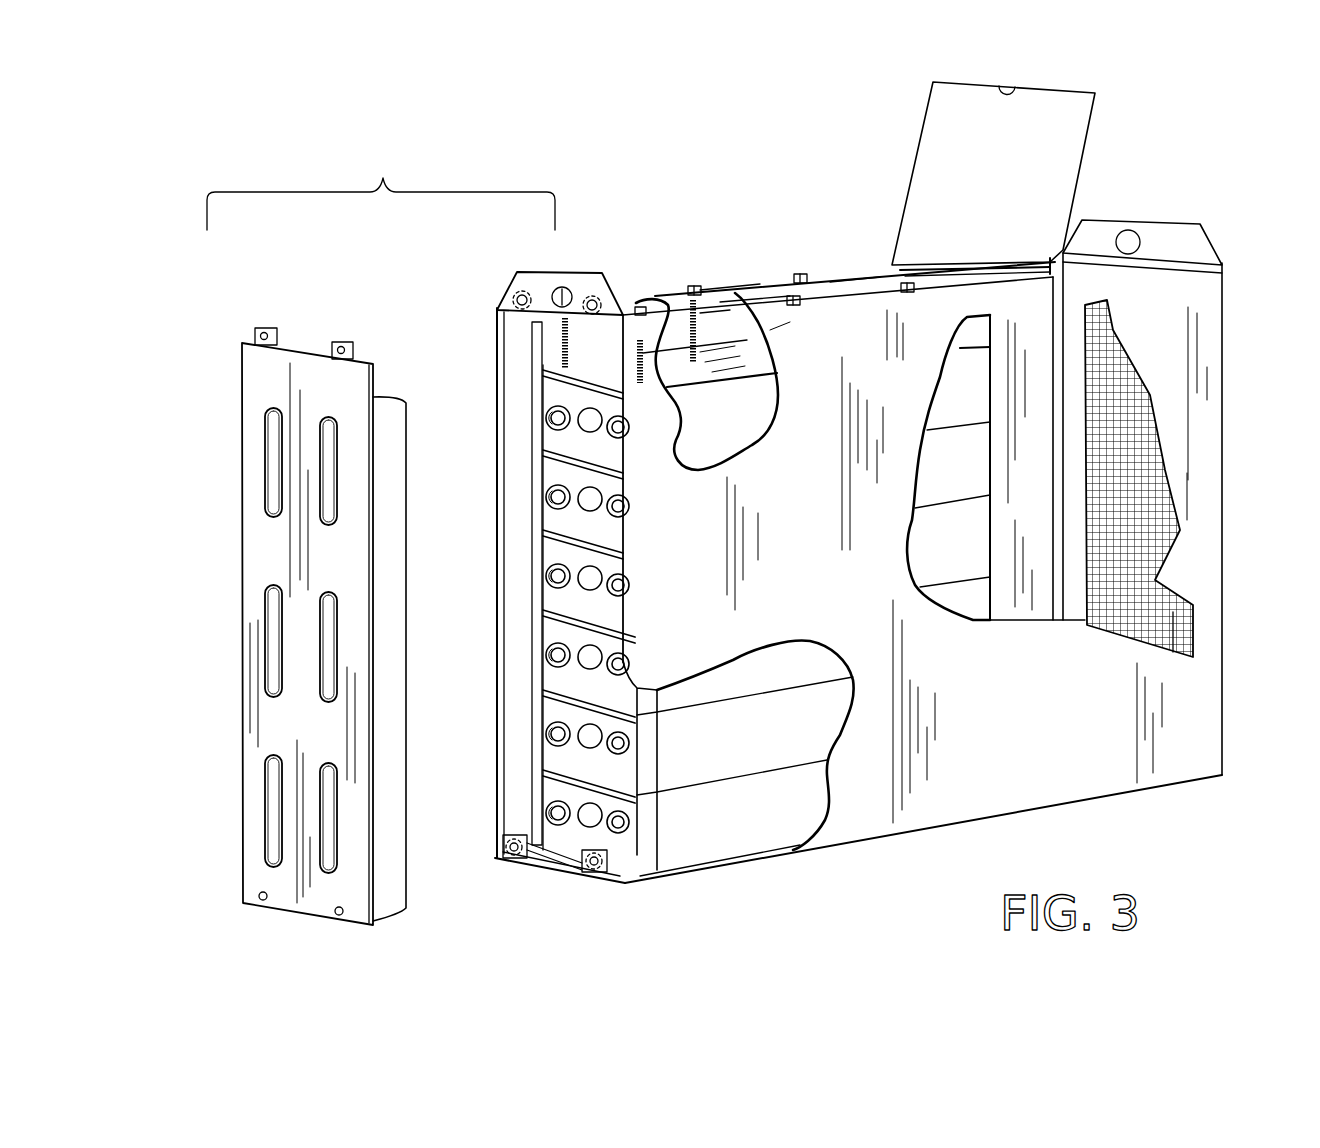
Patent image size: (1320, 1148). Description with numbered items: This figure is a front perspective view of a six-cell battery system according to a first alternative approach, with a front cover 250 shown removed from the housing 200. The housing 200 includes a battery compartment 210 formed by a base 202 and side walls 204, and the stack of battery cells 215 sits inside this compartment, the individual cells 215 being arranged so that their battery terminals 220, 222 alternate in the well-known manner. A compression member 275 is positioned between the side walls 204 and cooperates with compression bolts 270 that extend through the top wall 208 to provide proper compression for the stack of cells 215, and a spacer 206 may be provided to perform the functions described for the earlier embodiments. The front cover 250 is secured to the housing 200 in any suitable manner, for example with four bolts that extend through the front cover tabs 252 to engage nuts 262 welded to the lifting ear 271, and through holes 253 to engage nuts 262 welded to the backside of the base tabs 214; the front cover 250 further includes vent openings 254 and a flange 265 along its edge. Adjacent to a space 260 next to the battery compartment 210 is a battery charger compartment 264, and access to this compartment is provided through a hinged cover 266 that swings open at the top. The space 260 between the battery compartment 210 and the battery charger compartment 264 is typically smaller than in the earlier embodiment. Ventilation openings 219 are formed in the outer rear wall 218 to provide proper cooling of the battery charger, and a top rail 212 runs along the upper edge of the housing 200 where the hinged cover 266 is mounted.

The housing 200 is at (770, 240).
The base 202 is at (823, 847).
The side walls 204 is at (599, 585).
The spacer 206 is at (537, 350).
The top wall 208 is at (867, 273).
The battery compartment 210 is at (850, 488).
The top rail 212 is at (933, 280).
The base tabs 214 is at (532, 843).
The battery cells 215 is at (762, 424).
The outer rear wall 218 is at (1183, 643).
The ventilation openings 219 is at (1175, 550).
The battery terminals 220 is at (548, 417).
The battery terminals 222 is at (548, 497).
The front cover 250 is at (345, 579).
The front cover tabs 252 is at (330, 342).
The holes 253 is at (338, 913).
The vent openings 254 is at (267, 767).
The space 260 is at (1102, 430).
The nuts 262 is at (520, 297).
The battery charger compartment 264 is at (1095, 294).
The cover flange 265 is at (388, 873).
The hinged cover 266 is at (1037, 132).
The compression bolts 270 is at (683, 289).
The lifting ear 271 is at (525, 272).
The compression member 275 is at (750, 373).